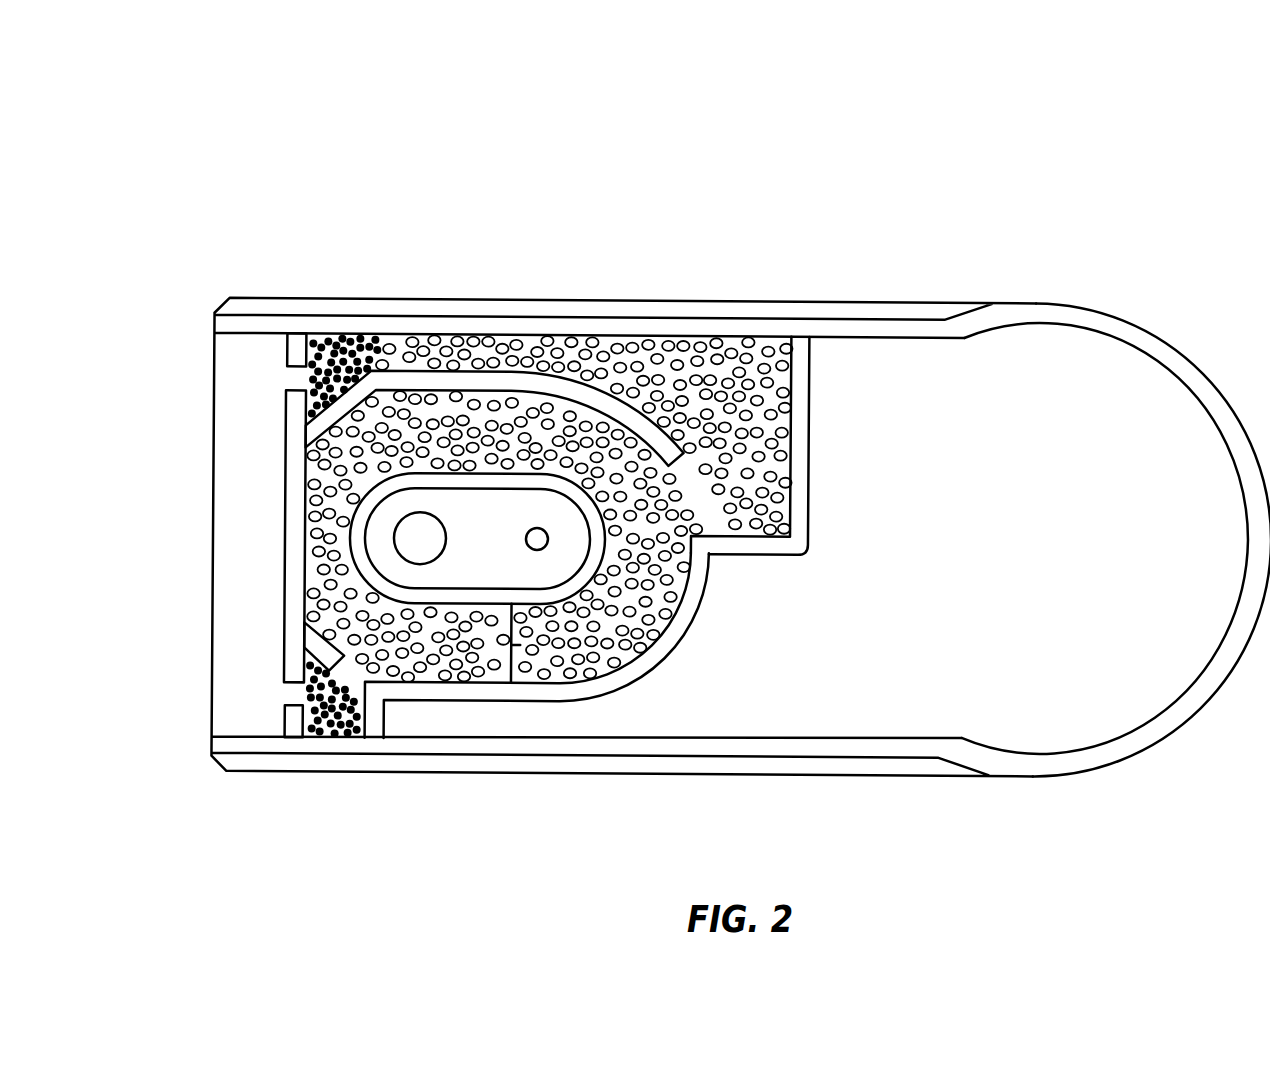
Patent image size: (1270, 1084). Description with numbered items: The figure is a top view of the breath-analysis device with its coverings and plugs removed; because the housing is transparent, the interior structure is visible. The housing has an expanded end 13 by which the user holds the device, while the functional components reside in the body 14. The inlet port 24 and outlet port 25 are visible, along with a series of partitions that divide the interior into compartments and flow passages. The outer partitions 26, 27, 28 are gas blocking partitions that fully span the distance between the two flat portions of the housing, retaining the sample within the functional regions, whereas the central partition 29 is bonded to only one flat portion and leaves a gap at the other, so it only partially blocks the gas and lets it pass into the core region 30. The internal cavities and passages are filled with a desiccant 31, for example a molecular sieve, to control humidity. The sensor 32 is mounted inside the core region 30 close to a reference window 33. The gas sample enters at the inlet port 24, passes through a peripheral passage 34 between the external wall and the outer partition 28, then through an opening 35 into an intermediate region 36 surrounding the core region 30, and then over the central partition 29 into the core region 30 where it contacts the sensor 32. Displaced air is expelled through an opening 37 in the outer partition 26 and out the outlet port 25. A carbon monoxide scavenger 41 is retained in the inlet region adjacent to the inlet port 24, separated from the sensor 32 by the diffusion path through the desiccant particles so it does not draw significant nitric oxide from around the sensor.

The expanded end 13 is at (957, 157).
The body 14 is at (947, 157).
The inlet port 24 is at (293, 379).
The outlet port 25 is at (292, 692).
The outer partition 26 is at (653, 645).
The outer partition 27 is at (808, 439).
The outer partition 28 is at (483, 377).
The central partition 29 is at (432, 480).
The core region 30 is at (455, 573).
The desiccant 31 is at (543, 428).
The sensor 32 is at (420, 537).
The reference window 33 is at (545, 538).
The peripheral passage 34 is at (537, 347).
The opening 35 is at (693, 482).
The intermediate region 36 is at (520, 643).
The opening 37 is at (347, 707).
The carbon monoxide scavenger 41 is at (328, 352).